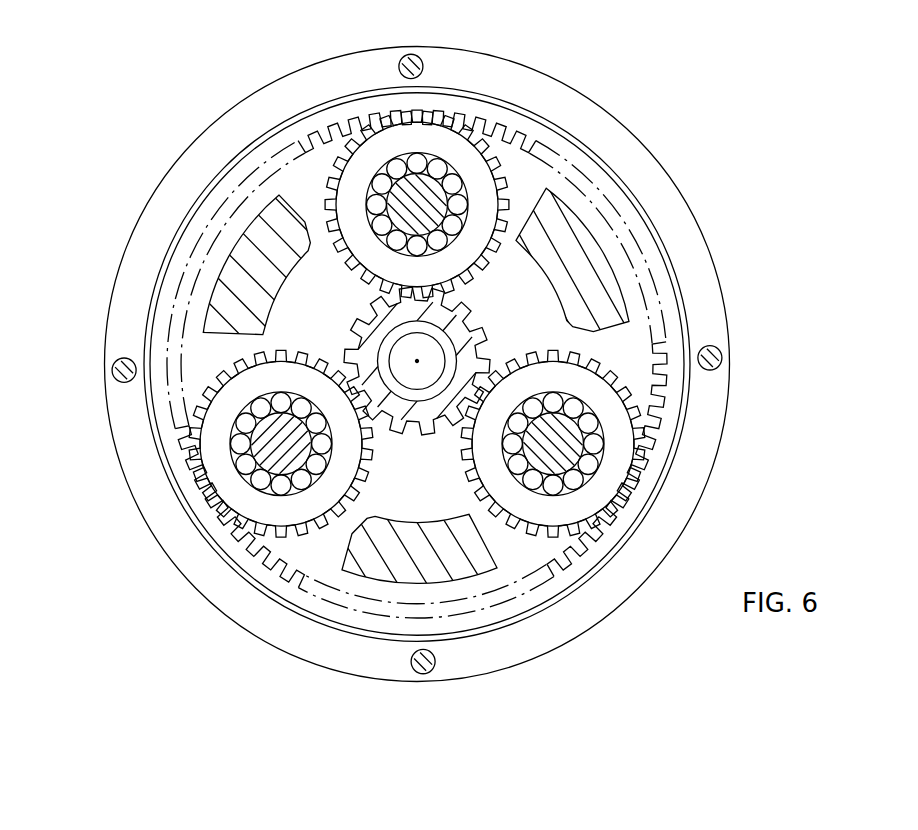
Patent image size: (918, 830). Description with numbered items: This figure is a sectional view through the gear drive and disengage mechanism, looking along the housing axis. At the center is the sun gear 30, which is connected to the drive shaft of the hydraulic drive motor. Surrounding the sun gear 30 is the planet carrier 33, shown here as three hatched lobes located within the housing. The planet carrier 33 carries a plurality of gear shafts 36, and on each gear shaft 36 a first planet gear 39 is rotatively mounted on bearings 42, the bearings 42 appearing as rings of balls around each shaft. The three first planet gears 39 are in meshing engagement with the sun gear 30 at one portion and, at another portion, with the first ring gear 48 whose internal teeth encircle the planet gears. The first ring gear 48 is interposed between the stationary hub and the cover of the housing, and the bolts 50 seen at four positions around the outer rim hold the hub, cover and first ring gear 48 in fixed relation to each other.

The sun gear 30 is at (463, 313).
The planet carrier 33 is at (276, 277).
The gear shafts 36 is at (405, 220).
The first planet gears 39 is at (343, 259).
The bearings 42 is at (437, 168).
The first ring gear 48 is at (391, 110).
The bolts 50 is at (411, 54).